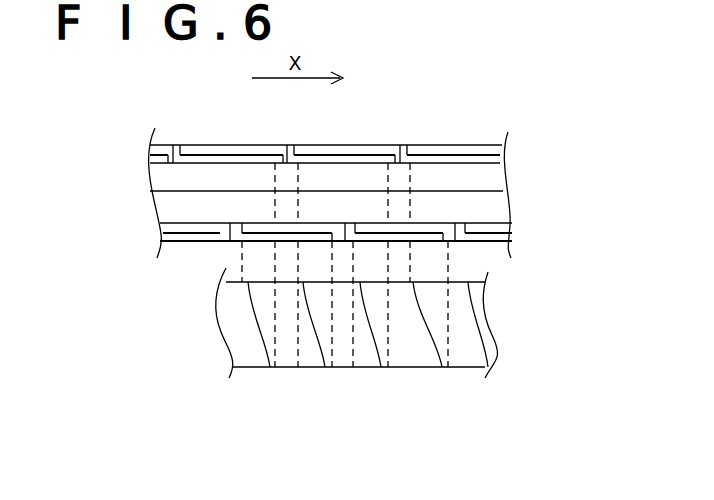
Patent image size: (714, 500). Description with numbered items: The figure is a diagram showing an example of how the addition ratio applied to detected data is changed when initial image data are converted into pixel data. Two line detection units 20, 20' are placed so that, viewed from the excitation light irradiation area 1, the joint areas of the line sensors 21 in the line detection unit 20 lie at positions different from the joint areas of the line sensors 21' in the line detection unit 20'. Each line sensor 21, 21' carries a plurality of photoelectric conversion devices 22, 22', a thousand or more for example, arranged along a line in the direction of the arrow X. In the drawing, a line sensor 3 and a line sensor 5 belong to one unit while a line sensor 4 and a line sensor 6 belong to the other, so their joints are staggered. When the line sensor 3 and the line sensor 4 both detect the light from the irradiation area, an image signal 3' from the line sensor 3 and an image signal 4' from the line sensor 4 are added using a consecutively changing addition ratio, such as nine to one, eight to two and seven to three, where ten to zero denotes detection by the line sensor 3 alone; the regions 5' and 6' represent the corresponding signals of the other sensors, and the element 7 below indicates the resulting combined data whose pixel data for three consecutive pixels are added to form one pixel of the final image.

The excitation light irradiation area 1 is at (490, 192).
The line sensor 3 is at (231, 126).
The second light emitting element 5 is at (344, 126).
The line sensor 4 is at (276, 215).
The fourth light emitting element 6 is at (391, 215).
The line detection unit 20 is at (371, 243).
The line sensor 21 is at (352, 258).
The photoelectric conversion device 22 is at (370, 215).
The line detection unit 20' is at (361, 121).
The line sensor 21' is at (325, 130).
The photoelectric conversion device 22' is at (325, 127).
The photosensitive member 7 is at (357, 346).
The image signal 3' is at (250, 324).
The image signal 4' is at (307, 324).
The exposed region of element 5 5' is at (363, 324).
The exposed region of element 6 6' is at (444, 324).